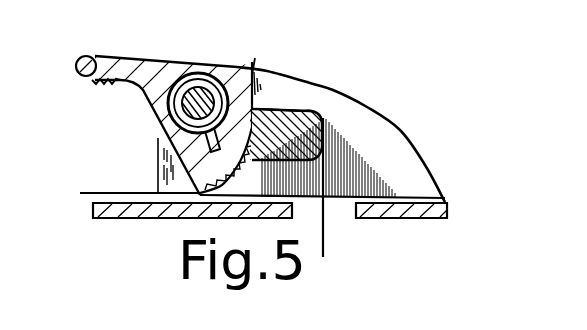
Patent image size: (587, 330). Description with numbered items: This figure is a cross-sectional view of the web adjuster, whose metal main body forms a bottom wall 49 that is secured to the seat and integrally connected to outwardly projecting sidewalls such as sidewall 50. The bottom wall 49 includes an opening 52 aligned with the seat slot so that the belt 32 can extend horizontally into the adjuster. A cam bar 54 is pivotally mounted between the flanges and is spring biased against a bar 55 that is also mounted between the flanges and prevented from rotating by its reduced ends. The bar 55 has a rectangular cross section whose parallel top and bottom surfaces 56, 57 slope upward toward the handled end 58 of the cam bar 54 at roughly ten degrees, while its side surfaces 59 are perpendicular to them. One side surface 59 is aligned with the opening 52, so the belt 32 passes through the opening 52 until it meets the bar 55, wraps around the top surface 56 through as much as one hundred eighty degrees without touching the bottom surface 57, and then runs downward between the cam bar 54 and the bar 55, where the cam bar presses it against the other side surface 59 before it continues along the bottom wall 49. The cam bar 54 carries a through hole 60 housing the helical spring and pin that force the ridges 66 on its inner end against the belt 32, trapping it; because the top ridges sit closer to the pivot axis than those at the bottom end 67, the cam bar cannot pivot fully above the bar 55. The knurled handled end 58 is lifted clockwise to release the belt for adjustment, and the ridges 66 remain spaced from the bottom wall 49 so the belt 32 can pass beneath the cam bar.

The belt 32 is at (323, 252).
The bottom wall 49 is at (105, 219).
The sidewall 50 is at (408, 148).
The opening 52 is at (350, 214).
The cam bar 54 is at (156, 62).
The bar 55 is at (290, 110).
The top surface 56 is at (320, 117).
The bottom surface 57 is at (263, 188).
The handled end 58 is at (88, 55).
The side surface 59 is at (266, 100).
The through hole 60 is at (163, 120).
The ridges 66 is at (258, 69).
The bottom end 67 is at (192, 165).